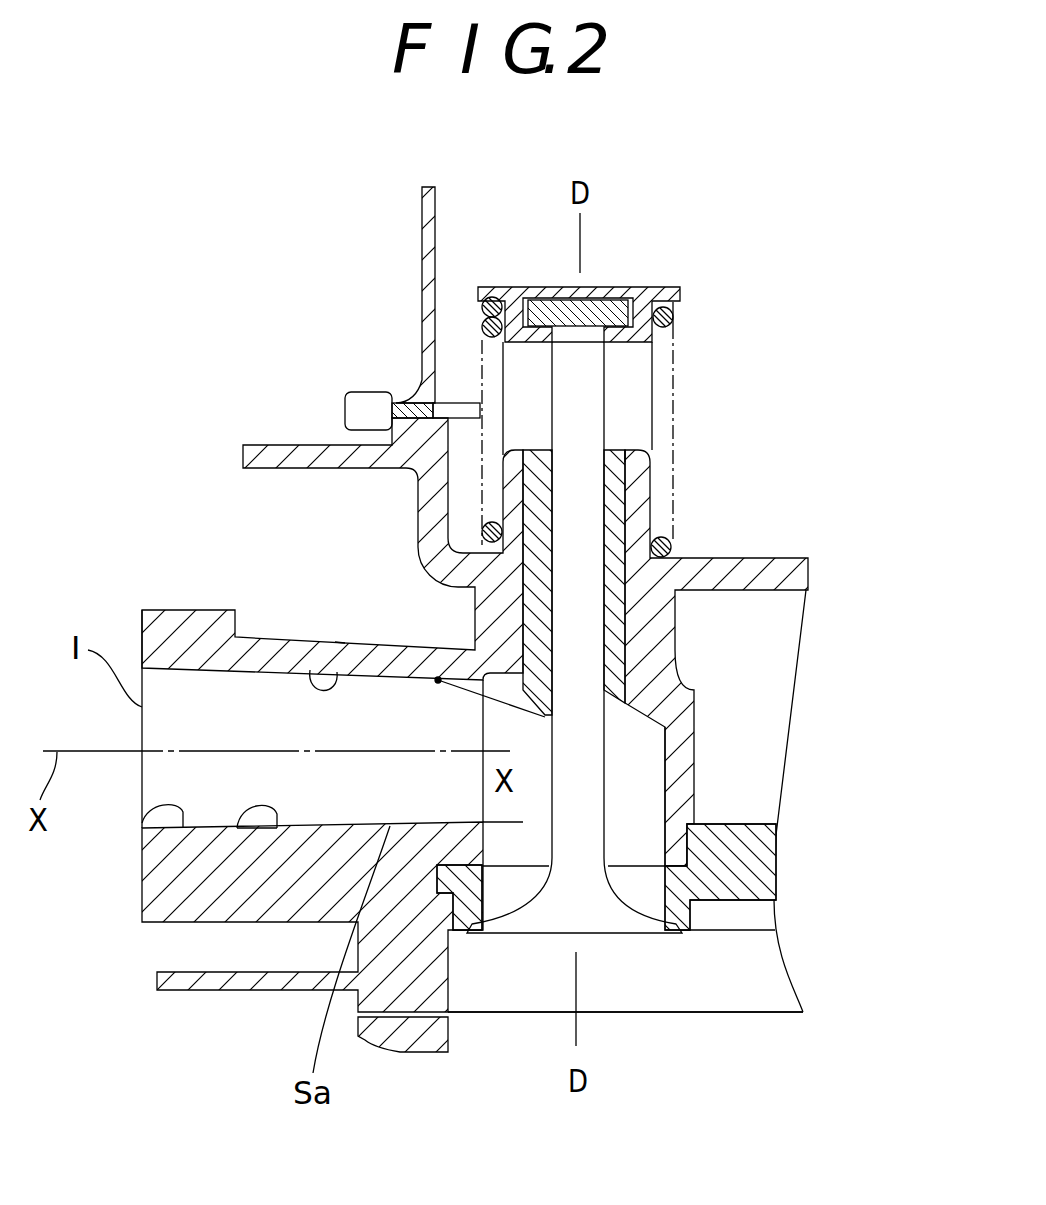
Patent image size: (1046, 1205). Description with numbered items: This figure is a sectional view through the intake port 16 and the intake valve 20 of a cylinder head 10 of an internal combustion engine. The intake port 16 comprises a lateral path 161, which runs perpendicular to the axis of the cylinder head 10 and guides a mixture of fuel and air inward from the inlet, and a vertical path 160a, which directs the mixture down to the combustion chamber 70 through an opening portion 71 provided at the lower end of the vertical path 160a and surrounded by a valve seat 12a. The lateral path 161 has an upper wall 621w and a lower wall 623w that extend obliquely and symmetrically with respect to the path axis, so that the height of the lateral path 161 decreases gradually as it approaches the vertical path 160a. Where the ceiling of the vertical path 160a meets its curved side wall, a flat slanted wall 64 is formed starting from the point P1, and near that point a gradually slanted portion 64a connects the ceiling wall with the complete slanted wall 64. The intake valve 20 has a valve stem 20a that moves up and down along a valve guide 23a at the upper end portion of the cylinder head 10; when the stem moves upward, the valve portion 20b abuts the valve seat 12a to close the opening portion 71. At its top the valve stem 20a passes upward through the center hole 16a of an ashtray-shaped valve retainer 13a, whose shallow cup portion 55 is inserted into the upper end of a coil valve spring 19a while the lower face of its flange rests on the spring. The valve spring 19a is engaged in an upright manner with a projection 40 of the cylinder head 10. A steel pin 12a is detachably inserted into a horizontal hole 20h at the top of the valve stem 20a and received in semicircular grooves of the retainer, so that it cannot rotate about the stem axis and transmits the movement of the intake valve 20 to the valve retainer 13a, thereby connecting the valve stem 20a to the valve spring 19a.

The cylinder head 10 is at (782, 547).
The pin 12a is at (618, 300).
The valve retainer 13a is at (682, 296).
The intake port 16 is at (197, 772).
The center hole 16a is at (612, 340).
The lateral path 161 is at (142, 824).
The valve spring 19a is at (670, 540).
The intake valve 20 is at (681, 623).
The valve stem 20a is at (592, 782).
The valve portion 20b is at (635, 933).
The hole 20h is at (594, 300).
The valve guide 23a is at (615, 647).
The projection 40 is at (637, 488).
The cup portion 55 is at (513, 322).
The flat slanted wall 64 is at (668, 730).
The gradually slanted portion 64a is at (507, 688).
The combustion chamber 70 is at (772, 982).
The opening portion 71 is at (452, 900).
The vertical path 160a is at (523, 822).
The upper wall 621w is at (337, 645).
The lower wall 623w is at (227, 827).
The starting point of the curved wall P1 is at (438, 680).